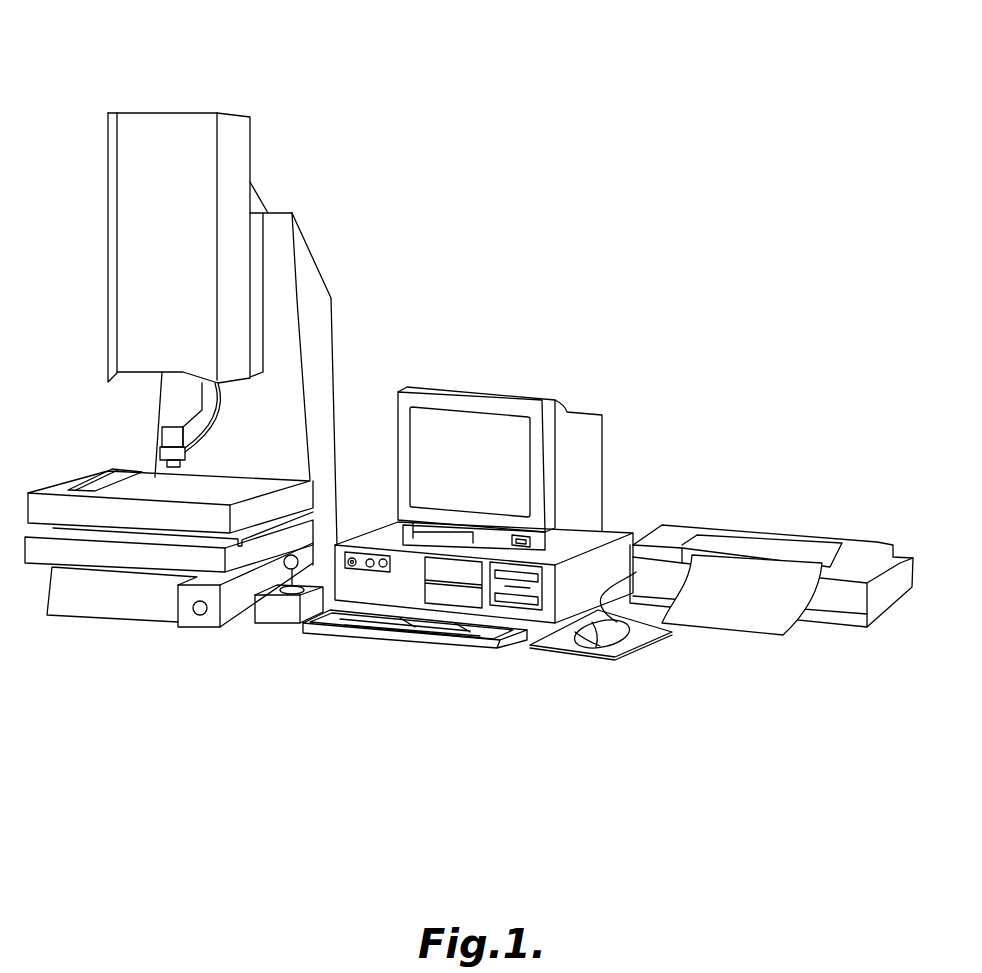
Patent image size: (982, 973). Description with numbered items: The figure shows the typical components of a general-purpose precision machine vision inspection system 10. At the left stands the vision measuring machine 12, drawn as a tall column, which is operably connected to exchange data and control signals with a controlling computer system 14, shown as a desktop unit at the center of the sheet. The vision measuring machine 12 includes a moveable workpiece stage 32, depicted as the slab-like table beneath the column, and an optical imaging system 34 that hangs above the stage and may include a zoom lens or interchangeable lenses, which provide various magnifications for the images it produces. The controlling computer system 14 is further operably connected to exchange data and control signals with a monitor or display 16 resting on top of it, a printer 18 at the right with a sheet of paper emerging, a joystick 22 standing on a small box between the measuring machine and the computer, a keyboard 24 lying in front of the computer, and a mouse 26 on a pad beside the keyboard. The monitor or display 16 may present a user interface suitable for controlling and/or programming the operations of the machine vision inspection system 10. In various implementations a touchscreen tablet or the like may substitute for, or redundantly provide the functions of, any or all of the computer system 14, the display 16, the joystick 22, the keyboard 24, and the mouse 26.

The machine vision inspection system 10 is at (613, 177).
The vision measuring machine 12 is at (165, 113).
The controlling computer system 14 is at (620, 517).
The monitor or display 16 is at (481, 392).
The printer 18 is at (778, 530).
The joystick 22 is at (277, 625).
The keyboard 24 is at (397, 640).
The mouse 26 is at (609, 633).
The moveable workpiece stage 32 is at (80, 485).
The optical imaging system 34 is at (162, 375).